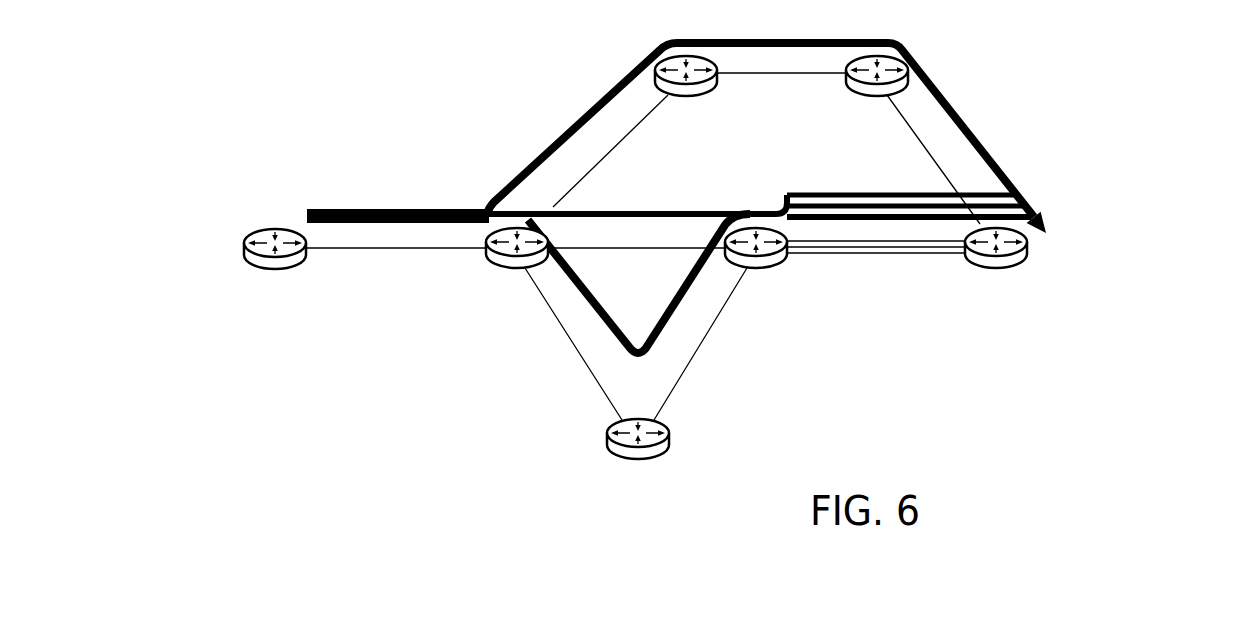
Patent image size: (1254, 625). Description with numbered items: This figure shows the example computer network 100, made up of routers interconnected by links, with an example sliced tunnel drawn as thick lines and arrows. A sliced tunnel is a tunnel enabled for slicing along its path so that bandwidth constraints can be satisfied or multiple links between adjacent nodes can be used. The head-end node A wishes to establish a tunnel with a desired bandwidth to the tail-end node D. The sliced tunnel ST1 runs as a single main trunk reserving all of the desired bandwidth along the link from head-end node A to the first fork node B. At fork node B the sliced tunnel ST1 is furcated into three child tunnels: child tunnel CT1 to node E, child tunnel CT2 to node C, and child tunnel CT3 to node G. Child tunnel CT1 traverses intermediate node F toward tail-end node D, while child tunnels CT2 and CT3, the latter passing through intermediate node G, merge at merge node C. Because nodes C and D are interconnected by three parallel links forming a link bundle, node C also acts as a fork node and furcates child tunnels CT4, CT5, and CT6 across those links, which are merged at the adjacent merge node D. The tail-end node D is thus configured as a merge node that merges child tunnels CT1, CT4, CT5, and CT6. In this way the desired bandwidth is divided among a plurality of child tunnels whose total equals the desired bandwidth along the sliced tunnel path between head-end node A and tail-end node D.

The computer network 100 is at (416, 78).
The head-end node A is at (258, 228).
The fork node B is at (510, 268).
The fork/merge node C is at (757, 268).
The tail-end/merge node D is at (1027, 247).
The node E is at (703, 93).
The intermediate node F is at (852, 89).
The intermediate node G is at (640, 461).
The sliced tunnel ST1 is at (396, 198).
The child tunnel CT1 is at (567, 120).
The child tunnel CT2 is at (673, 207).
The child tunnel CT3 is at (603, 295).
The child tunnel CT4 is at (795, 189).
The child tunnel CT5 is at (829, 194).
The child tunnel CT6 is at (879, 207).